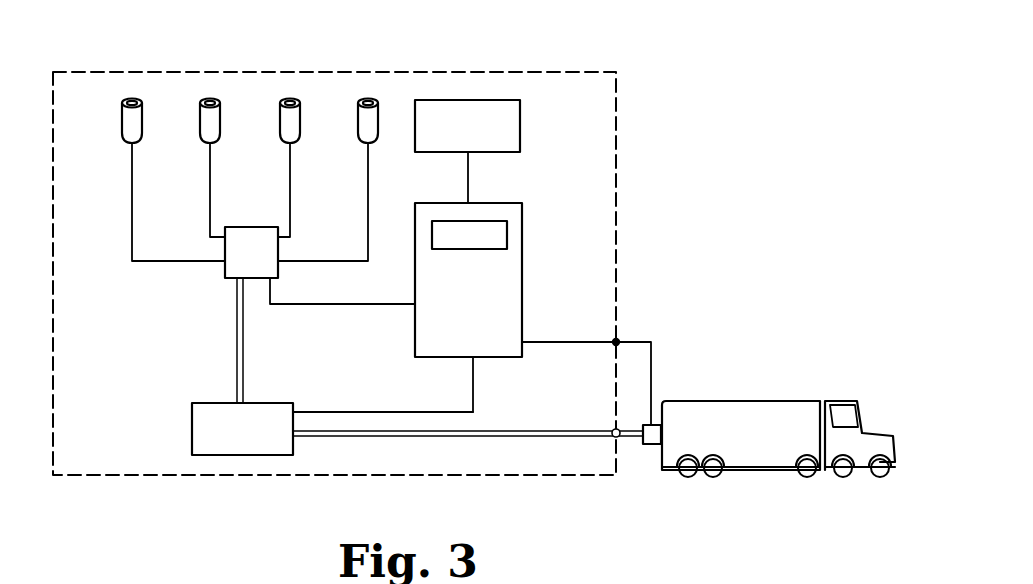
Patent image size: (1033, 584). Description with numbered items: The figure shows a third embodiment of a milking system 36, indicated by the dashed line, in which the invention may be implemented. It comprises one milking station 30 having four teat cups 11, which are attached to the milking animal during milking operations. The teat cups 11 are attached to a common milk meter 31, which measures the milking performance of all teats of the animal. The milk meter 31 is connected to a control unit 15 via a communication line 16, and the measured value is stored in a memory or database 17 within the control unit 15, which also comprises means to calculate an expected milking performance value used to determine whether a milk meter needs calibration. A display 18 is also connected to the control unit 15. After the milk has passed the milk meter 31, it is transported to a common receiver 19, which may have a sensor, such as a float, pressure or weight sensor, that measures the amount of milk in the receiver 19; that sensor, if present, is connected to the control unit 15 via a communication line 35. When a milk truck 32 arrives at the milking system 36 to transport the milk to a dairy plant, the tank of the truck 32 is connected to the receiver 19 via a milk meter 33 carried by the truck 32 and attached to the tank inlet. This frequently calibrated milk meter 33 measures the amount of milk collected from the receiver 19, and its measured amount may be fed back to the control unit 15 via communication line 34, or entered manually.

The teat cups 11 is at (122, 130).
The control unit 15 is at (508, 312).
The communication line 16 is at (392, 312).
The memory or database 17 is at (500, 240).
The display 18 is at (500, 130).
The common receiver 19 is at (218, 420).
The milking station 30 is at (316, 81).
The common milk meter 31 is at (242, 262).
The milk truck 32 is at (750, 400).
The milk meter 33 is at (650, 441).
The communication line 34 is at (630, 341).
The communication line 35 is at (382, 412).
The milking system 36 is at (616, 178).